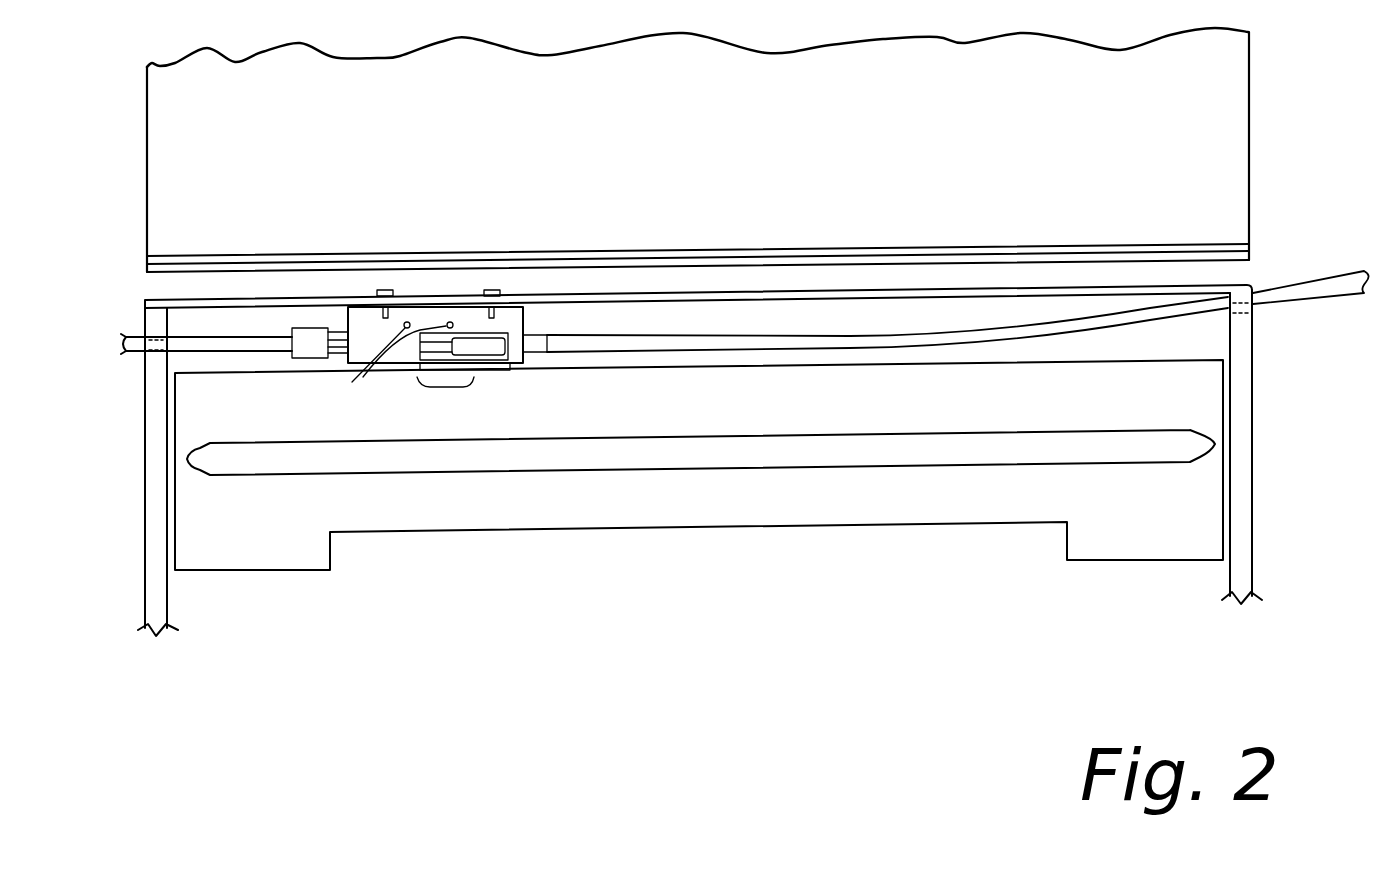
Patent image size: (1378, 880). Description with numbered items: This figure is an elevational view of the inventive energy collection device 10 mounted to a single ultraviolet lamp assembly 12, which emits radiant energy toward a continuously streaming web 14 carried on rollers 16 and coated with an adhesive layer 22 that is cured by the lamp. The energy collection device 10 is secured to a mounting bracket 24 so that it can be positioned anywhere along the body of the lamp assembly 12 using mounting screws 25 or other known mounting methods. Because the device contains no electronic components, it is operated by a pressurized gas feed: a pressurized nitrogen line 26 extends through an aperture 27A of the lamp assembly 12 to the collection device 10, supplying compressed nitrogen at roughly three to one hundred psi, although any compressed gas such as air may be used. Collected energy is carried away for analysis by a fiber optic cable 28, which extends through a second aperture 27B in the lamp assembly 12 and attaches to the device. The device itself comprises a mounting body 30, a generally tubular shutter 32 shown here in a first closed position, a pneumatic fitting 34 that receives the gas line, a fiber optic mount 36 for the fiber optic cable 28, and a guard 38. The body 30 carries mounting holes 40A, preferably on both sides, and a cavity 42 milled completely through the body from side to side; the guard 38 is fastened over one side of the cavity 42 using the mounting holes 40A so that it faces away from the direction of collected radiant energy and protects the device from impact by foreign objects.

The energy collection device 10 is at (464, 322).
The ultraviolet lamp assembly 12 is at (442, 544).
The web 14 is at (1255, 259).
The rollers 16 is at (1253, 179).
The adhesive layer 22 is at (1256, 248).
The mounting bracket 24 is at (146, 304).
The mounting screws 25 is at (492, 290).
The pressurized nitrogen line 26 is at (132, 355).
The aperture 27A is at (140, 356).
The aperture 27B is at (1257, 314).
The fiber optic cable 28 is at (1312, 298).
The mounting body 30 is at (518, 325).
The tubular shutter 32 is at (488, 343).
The pneumatic fitting 34 is at (307, 330).
The fiber optic mount 36 is at (541, 342).
The guard 38 is at (430, 377).
The mounting holes 40A is at (377, 369).
The cavity 42 is at (466, 390).